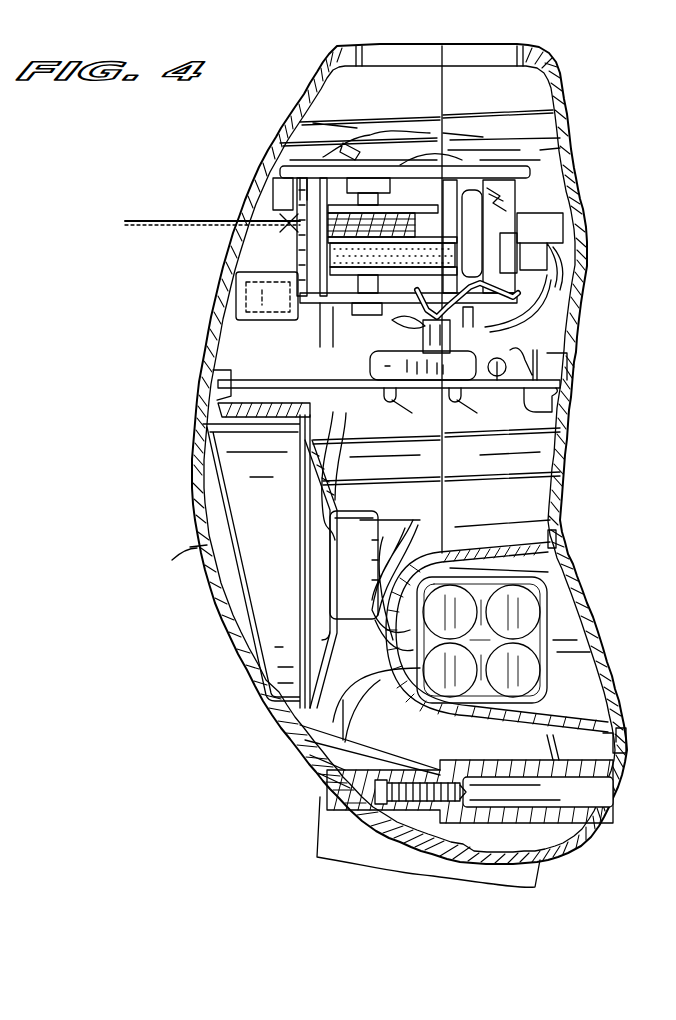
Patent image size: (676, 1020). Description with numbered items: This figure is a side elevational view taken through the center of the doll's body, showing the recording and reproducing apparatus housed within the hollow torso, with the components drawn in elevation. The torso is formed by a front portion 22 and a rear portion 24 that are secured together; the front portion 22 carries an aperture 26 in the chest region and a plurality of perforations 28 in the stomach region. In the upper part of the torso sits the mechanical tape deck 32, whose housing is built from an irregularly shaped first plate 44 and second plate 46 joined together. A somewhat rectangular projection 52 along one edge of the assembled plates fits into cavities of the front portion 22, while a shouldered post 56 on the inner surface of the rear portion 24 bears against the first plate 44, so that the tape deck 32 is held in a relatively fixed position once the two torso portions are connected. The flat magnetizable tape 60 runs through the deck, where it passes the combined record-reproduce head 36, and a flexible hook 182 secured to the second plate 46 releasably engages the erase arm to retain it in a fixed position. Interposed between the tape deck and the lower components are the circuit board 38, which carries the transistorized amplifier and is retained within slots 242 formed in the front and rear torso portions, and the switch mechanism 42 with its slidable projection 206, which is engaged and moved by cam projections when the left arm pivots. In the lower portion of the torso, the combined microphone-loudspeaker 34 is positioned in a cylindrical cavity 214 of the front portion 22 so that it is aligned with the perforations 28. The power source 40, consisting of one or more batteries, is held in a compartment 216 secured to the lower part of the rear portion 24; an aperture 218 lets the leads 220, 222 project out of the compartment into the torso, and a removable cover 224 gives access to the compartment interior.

The front portion 22 is at (273, 135).
The rear portion 24 is at (567, 102).
The aperture 26 is at (242, 213).
The perforations 28 is at (207, 577).
The mechanical tape deck 32 is at (548, 178).
The combined microphone-loudspeaker 34 is at (247, 495).
The combined record-reproduce head 36 is at (537, 253).
The circuit board 38 is at (553, 407).
The power source 40 is at (530, 627).
The switch mechanism 42 is at (390, 370).
The first plate 44 is at (337, 160).
The second plate 46 is at (307, 307).
The rectangular projection 52 is at (263, 167).
The shouldered post 56 is at (557, 157).
The tape 60 is at (290, 248).
The hook 182 is at (540, 293).
The slidable projection 206 is at (395, 330).
The cylindrical cavity 214 is at (227, 413).
The compartment 216 is at (577, 683).
The aperture 218 is at (390, 657).
The lead 220 is at (390, 553).
The lead 222 is at (403, 553).
The removable cover 224 is at (583, 583).
The slots 242 is at (560, 352).